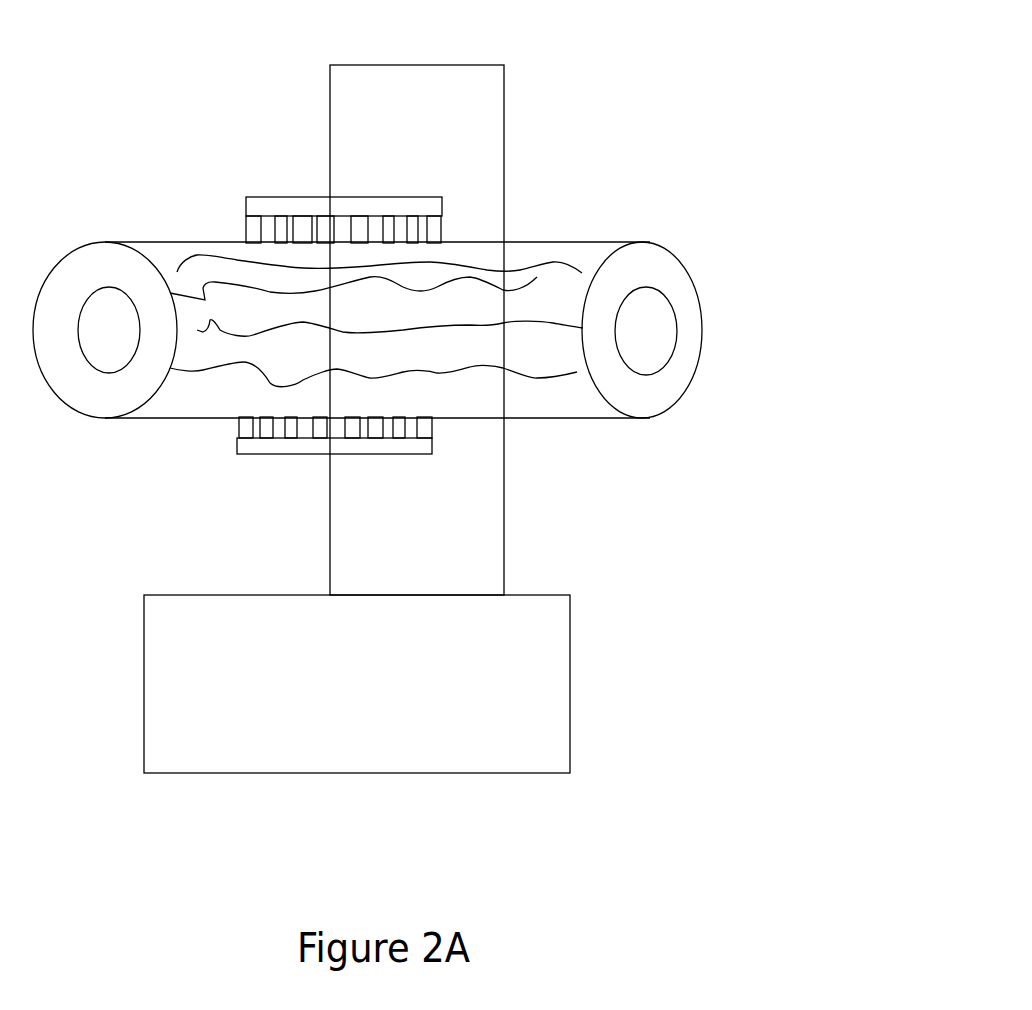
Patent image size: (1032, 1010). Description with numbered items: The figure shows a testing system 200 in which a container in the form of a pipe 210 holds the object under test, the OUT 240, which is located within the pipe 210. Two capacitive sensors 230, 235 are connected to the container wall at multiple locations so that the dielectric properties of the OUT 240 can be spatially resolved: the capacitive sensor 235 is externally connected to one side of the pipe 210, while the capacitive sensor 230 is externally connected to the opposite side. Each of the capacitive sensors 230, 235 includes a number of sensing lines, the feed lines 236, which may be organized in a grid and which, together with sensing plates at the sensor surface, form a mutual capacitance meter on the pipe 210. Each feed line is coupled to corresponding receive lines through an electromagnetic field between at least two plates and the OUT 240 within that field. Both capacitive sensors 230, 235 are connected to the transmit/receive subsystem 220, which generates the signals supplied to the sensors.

The testing system 200 is at (912, 23).
The pipe 210 is at (572, 242).
The transmit/receive subsystem 220 is at (570, 652).
The capacitive sensor 230 is at (297, 455).
The capacitive sensor 235 is at (307, 197).
The feed lines 236 is at (246, 230).
The OUT 240 is at (240, 258).